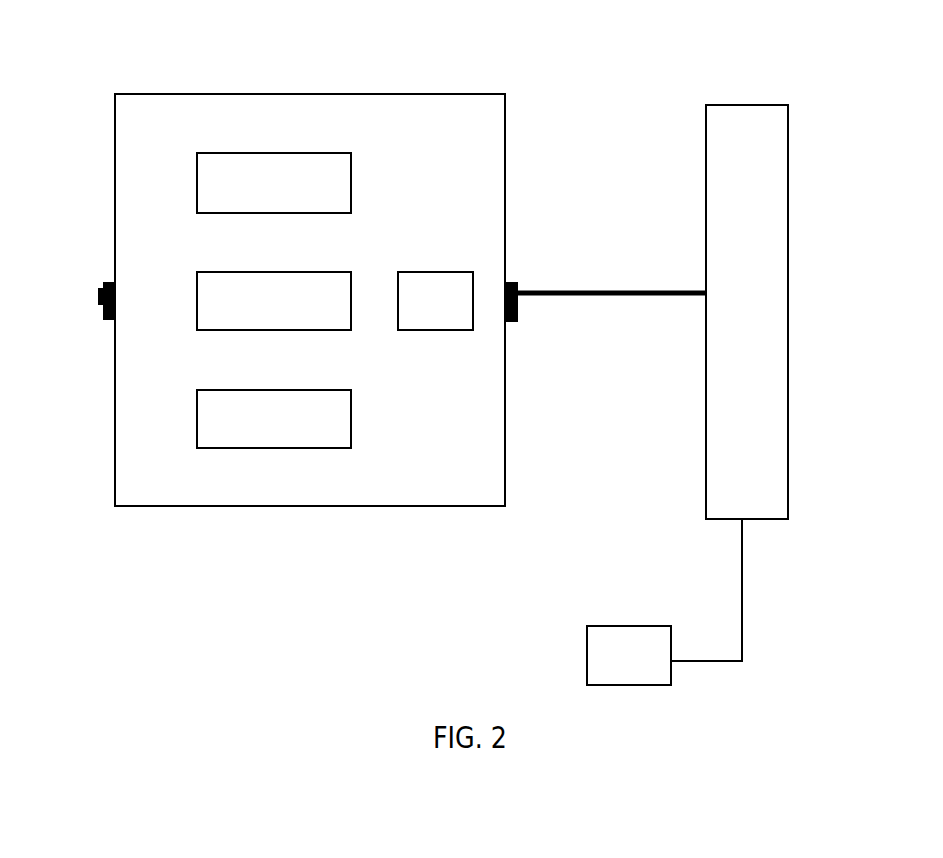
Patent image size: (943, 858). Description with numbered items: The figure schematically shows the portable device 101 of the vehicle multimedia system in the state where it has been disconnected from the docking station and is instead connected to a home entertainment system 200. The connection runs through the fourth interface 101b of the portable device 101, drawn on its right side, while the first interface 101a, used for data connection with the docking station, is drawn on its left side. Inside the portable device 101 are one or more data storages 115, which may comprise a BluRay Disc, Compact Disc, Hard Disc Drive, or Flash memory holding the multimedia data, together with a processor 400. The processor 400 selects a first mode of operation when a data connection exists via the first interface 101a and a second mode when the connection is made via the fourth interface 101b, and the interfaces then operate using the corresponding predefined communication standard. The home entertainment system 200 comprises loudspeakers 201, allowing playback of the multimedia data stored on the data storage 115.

The portable device 101 is at (482, 94).
The first interface 101a is at (99, 295).
The fourth interface 101b is at (518, 320).
The data storage 115 is at (220, 153).
The processor 400 is at (422, 272).
The home entertainment system 200 is at (730, 105).
The loudspeakers 201 is at (623, 626).